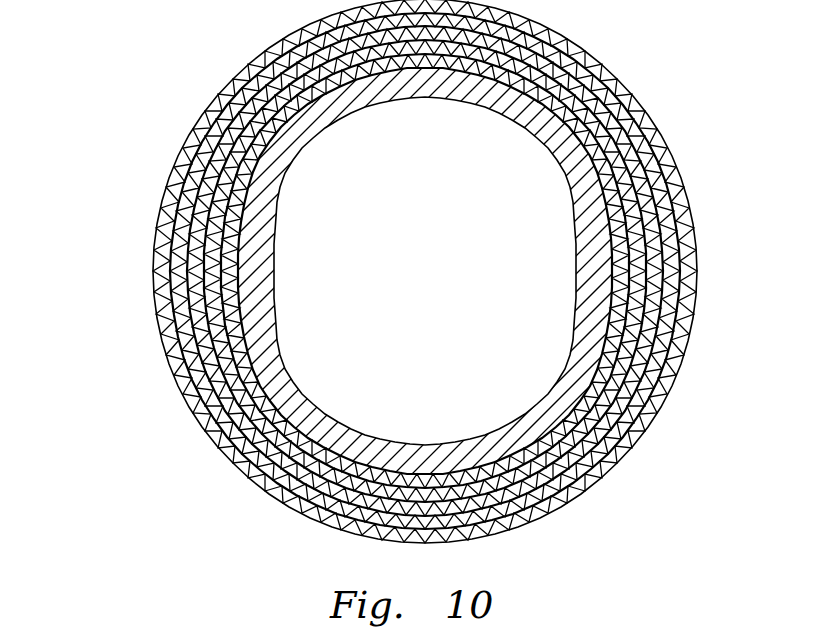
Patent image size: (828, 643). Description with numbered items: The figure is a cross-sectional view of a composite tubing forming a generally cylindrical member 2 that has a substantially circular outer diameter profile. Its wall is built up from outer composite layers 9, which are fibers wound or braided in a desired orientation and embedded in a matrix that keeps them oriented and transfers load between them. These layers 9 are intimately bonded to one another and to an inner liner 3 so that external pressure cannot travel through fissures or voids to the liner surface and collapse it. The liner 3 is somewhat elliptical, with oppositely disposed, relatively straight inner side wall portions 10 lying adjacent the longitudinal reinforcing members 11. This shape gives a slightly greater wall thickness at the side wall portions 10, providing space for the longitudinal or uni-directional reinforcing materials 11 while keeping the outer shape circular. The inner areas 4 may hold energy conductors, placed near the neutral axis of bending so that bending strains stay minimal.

The generally cylindrical member 2 is at (698, 148).
The inner liner 3 is at (278, 225).
The inner areas 4 is at (120, 225).
The outer composite layers 9 is at (624, 80).
The inner side wall portions 10 is at (570, 277).
The longitudinal reinforcing members 11 is at (234, 303).